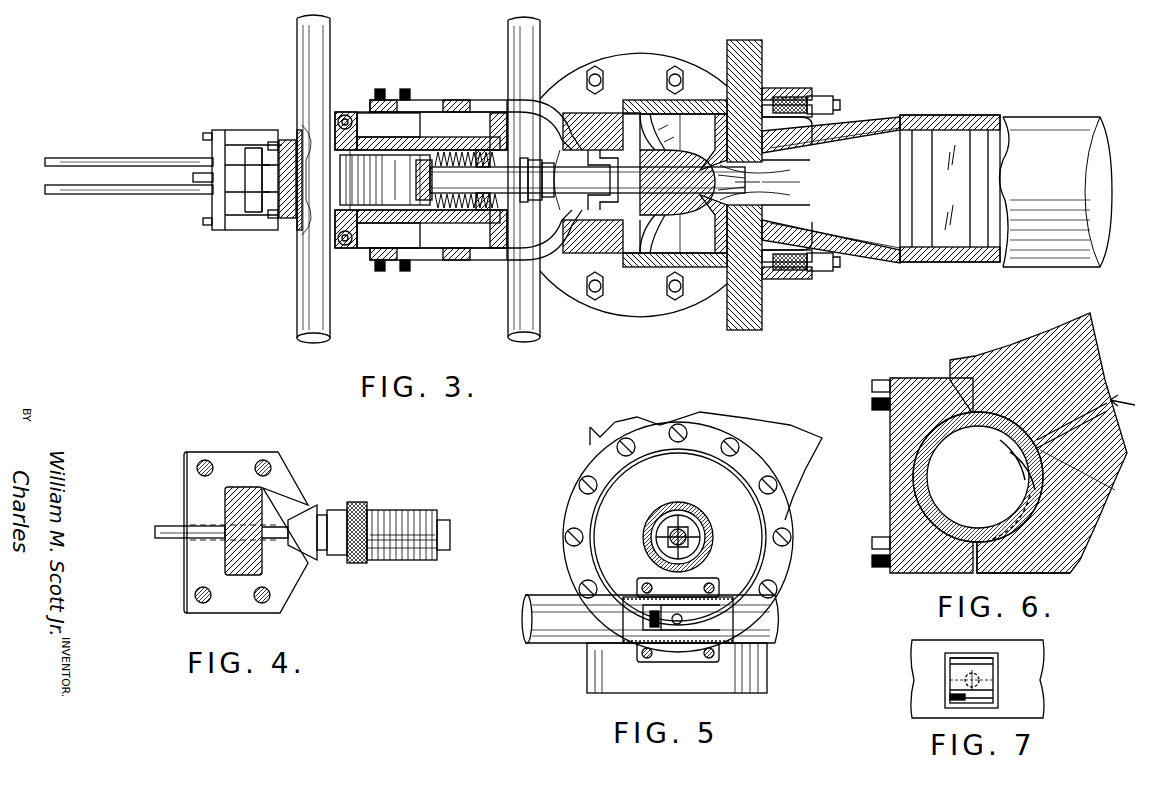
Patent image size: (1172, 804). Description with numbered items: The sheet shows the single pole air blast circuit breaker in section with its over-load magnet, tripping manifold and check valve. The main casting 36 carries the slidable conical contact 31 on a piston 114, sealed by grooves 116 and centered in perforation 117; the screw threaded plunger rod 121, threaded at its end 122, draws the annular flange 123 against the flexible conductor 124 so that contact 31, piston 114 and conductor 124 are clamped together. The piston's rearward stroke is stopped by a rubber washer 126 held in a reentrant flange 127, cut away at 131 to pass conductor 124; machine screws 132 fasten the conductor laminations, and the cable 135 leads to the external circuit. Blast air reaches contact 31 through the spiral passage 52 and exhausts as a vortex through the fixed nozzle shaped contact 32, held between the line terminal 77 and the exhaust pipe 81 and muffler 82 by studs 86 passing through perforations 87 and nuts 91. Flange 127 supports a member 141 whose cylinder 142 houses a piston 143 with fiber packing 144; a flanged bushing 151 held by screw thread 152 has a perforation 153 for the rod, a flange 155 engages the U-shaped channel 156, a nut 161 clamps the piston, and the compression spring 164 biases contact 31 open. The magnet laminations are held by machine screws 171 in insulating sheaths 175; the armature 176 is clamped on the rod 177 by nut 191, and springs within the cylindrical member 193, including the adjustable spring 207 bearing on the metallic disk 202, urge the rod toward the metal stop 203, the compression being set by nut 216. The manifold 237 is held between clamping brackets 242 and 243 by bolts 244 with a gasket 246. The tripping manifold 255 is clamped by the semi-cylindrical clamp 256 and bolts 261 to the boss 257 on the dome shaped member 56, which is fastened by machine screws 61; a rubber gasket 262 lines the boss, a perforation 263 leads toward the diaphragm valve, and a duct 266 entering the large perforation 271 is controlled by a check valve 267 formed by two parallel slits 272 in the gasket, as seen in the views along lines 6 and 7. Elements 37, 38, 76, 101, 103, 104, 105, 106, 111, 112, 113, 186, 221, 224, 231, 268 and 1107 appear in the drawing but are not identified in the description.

In FIG. 3, the conical contact 31 is at (672, 230).
In FIG. 3, the nozzle shaped contact 32 is at (764, 184).
In FIG. 3, the main casting 36 is at (660, 284).
In FIG. 3, the circular flange 37 is at (632, 57).
In FIG. 5, the mounting block 38 is at (767, 662).
In FIG. 3, the passage 52 is at (648, 125).
In FIG. 5, the dome shaped member 56 is at (692, 532).
In FIG. 6, the dome shaped member 56 is at (1022, 350).
In FIG. 5, the machine screws 61 is at (727, 440).
In FIG. 3, the body member 76 is at (698, 100).
In FIG. 3, the line terminal 77 is at (780, 88).
In FIG. 3, the exhaust pipe 81 is at (882, 128).
In FIG. 3, the muffler 82 is at (998, 109).
In FIG. 3, the studs 86 is at (833, 104).
In FIG. 3, the perforations 87 is at (790, 97).
In FIG. 3, the nuts 91 is at (836, 96).
In FIG. 3, the upper mounting block 101 is at (762, 62).
In FIG. 3, the lower mounting block 103 is at (727, 318).
In FIG. 3, the gasket plate 104 is at (790, 72).
In FIG. 3, the nozzle flange 105 is at (812, 126).
In FIG. 3, the body wall 106 is at (706, 100).
In FIG. 3, the inner cone wall 111 is at (800, 205).
In FIG. 3, the ring coupling 112 is at (930, 107).
In FIG. 3, the sight glass 113 is at (957, 187).
In FIG. 3, the piston 114 is at (590, 112).
In FIG. 3, the grooves 116 is at (620, 120).
In FIG. 3, the perforation 117 is at (592, 215).
In FIG. 3, the plunger rod 121 is at (538, 192).
In FIG. 3, the threaded end 122 is at (665, 150).
In FIG. 3, the annular flange 123 is at (590, 182).
In FIG. 3, the flexible conductor 124 is at (435, 93).
In FIG. 3, the flexible washer 126 is at (578, 262).
In FIG. 3, the reentrant flange 127 is at (572, 113).
In FIG. 3, the cut away 131 is at (560, 260).
In FIG. 3, the machine screws 132 is at (405, 89).
In FIG. 3, the cable 135 is at (123, 162).
In FIG. 3, the member 141 is at (512, 105).
In FIG. 3, the cylinder 142 is at (410, 150).
In FIG. 3, the piston 143 is at (412, 137).
In FIG. 3, the packing 144 is at (352, 248).
In FIG. 3, the flanged bushing 151 is at (497, 113).
In FIG. 3, the screw thread 152 is at (483, 212).
In FIG. 3, the perforation 153 is at (531, 182).
In FIG. 3, the flange 155 is at (440, 160).
In FIG. 3, the U-shaped channel 156 is at (408, 223).
In FIG. 3, the nut 161 is at (388, 125).
In FIG. 3, the compression spring 164 is at (480, 210).
In FIG. 4, the machine screws 171 is at (258, 465).
In FIG. 4, the insulating sheaths 175 is at (195, 540).
In FIG. 4, the armature 176 is at (318, 512).
In FIG. 3, the plunger rod 177 is at (262, 195).
In FIG. 4, the plunger rod 177 is at (165, 528).
In FIG. 5, the plunger rod 177 is at (655, 522).
In FIG. 4, the bracket plate 186 is at (192, 523).
In FIG. 4, the nut 191 is at (262, 545).
In FIG. 4, the cylindrical member 193 is at (430, 512).
In FIG. 5, the cylindrical member 193 is at (718, 549).
In FIG. 5, the metallic disk 202 is at (700, 536).
In FIG. 4, the metal stop 203 is at (322, 552).
In FIG. 4, the adjustable spring 207 is at (400, 512).
In FIG. 5, the adjustable spring 207 is at (700, 528).
In FIG. 4, the nut 216 is at (360, 502).
In FIG. 3, the pin 221 is at (268, 218).
In FIG. 7, the pin 221 is at (990, 673).
In FIG. 3, the clamp plate 224 is at (283, 140).
In FIG. 3, the bracket 231 is at (243, 140).
In FIG. 3, the manifold 237 is at (297, 42).
In FIG. 3, the clamping bracket 242 is at (285, 140).
In FIG. 3, the clamping bracket 243 is at (357, 112).
In FIG. 4, the bolts 244 is at (450, 535).
In FIG. 3, the gasket 246 is at (340, 112).
In FIG. 3, the blast valve control manifold 255 is at (540, 48).
In FIG. 5, the blast valve control manifold 255 is at (525, 620).
In FIG. 6, the blast valve control manifold 255 is at (915, 482).
In FIG. 7, the blast valve control manifold 255 is at (1022, 648).
In FIG. 5, the semi-cylindrical clamp 256 is at (678, 620).
In FIG. 6, the semi-cylindrical clamp 256 is at (892, 435).
In FIG. 5, the boss 257 is at (715, 580).
In FIG. 6, the boss 257 is at (1012, 575).
In FIG. 5, the bolts 261 is at (715, 588).
In FIG. 6, the bolts 261 is at (872, 384).
In FIG. 6, the gasket 262 is at (1030, 498).
In FIG. 5, the perforation 263 is at (683, 619).
In FIG. 5, the duct 266 is at (645, 584).
In FIG. 5, the check valve 267 is at (655, 630).
In FIG. 6, the check valve 267 is at (1028, 476).
In FIG. 7, the check valve 267 is at (962, 665).
In FIG. 6, the slot 268 is at (1075, 430).
In FIG. 7, the slot 268 is at (978, 653).
In FIG. 6, the perforation 271 is at (1010, 450).
In FIG. 5, the slits 272 is at (645, 612).
In FIG. 7, the slits 272 is at (960, 686).
In FIG. 3, the flow arrow 1107 is at (795, 187).
In FIG. 5, the section line 6- 6 is at (653, 567).
In FIG. 6, the section line 7- 7 is at (1002, 465).